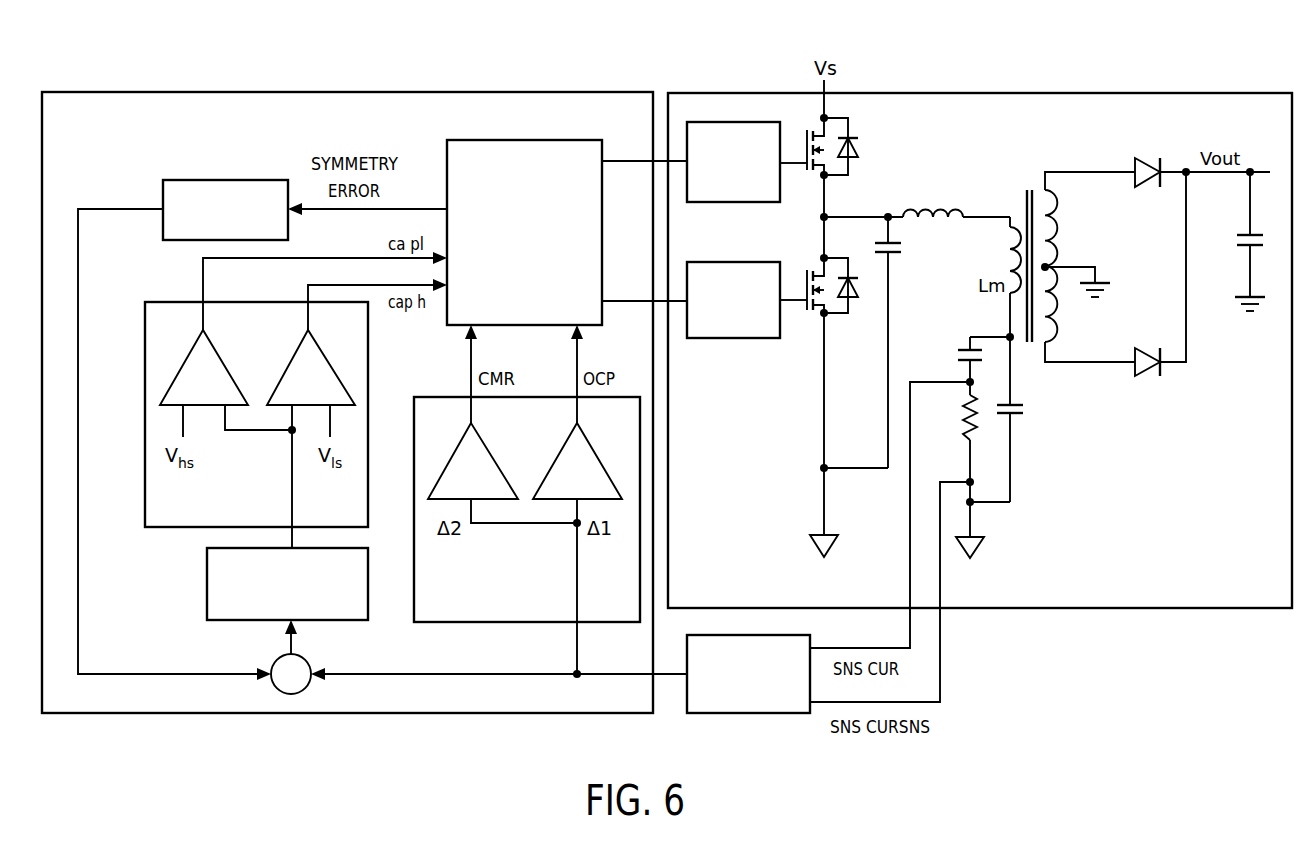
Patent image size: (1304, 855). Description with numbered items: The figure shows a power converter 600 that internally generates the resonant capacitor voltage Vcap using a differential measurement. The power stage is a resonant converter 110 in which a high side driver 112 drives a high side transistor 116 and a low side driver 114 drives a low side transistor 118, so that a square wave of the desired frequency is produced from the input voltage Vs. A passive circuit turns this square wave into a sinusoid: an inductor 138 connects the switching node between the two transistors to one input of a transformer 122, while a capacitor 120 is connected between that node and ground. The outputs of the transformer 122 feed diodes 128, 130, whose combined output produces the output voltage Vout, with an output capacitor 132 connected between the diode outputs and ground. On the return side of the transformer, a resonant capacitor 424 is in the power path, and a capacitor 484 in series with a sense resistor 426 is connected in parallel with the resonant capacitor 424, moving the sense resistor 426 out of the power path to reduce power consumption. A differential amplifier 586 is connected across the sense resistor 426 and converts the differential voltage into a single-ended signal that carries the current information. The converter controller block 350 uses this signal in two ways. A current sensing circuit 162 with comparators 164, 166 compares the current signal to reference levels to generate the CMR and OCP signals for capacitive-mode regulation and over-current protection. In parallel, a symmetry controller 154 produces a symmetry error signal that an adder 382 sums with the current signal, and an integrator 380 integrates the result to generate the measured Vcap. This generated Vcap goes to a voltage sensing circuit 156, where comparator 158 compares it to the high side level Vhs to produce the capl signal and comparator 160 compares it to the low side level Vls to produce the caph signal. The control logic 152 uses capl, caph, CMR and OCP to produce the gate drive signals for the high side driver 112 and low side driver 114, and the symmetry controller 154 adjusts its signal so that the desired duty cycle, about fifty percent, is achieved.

The power converter 600 is at (70, 56).
The converter controller block 350 is at (428, 92).
The symmetry controller 154 is at (210, 180).
The voltage sensing circuit 156 is at (180, 302).
The comparator 158 is at (184, 363).
The comparator 160 is at (284, 363).
The integrator 380 is at (207, 583).
The adder 382 is at (278, 656).
The converter controller 152 is at (555, 140).
The current sensing circuit 162 is at (478, 622).
The comparator 164 is at (500, 468).
The comparator 166 is at (602, 458).
The resonant converter 110 is at (1040, 93).
The high side driver 112 is at (720, 202).
The low side driver 114 is at (720, 338).
The high side transistor 116 is at (852, 120).
The low side transistor 118 is at (850, 316).
The capacitor 120 is at (904, 250).
The inductor 138 is at (942, 211).
The transformer 122 is at (1050, 227).
The diode 128 is at (1142, 158).
The diode 130 is at (1142, 378).
The capacitor 132 is at (1237, 238).
The capacitor 484 is at (958, 354).
The sense resistor 426 is at (963, 427).
The resonant capacitor 424 is at (1026, 418).
The differential amplifier 586 is at (745, 713).